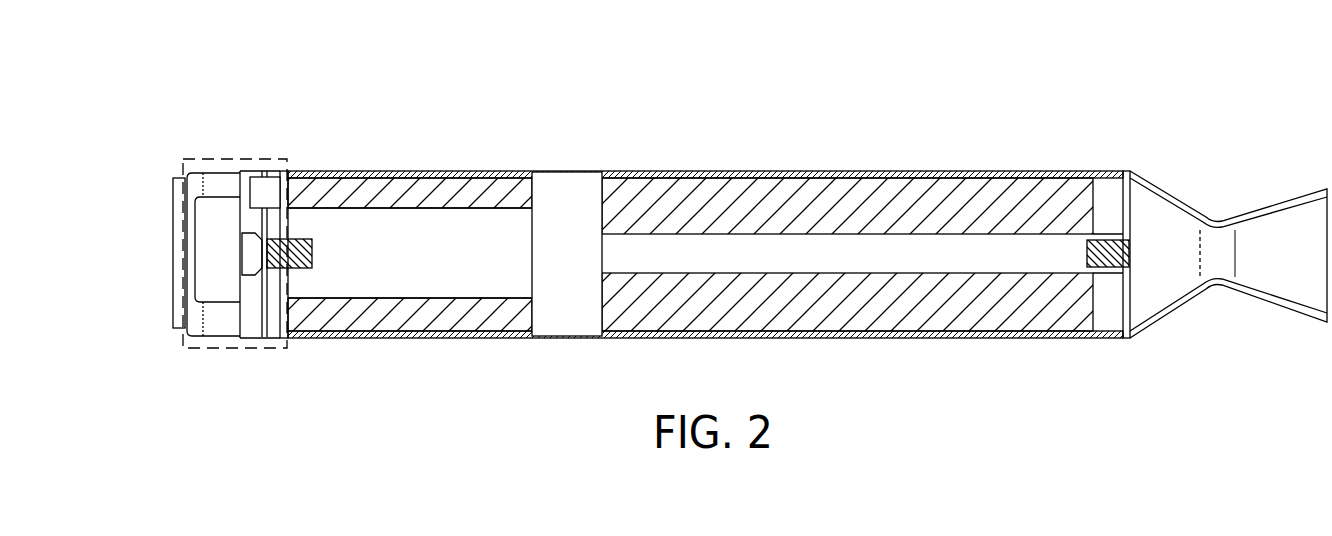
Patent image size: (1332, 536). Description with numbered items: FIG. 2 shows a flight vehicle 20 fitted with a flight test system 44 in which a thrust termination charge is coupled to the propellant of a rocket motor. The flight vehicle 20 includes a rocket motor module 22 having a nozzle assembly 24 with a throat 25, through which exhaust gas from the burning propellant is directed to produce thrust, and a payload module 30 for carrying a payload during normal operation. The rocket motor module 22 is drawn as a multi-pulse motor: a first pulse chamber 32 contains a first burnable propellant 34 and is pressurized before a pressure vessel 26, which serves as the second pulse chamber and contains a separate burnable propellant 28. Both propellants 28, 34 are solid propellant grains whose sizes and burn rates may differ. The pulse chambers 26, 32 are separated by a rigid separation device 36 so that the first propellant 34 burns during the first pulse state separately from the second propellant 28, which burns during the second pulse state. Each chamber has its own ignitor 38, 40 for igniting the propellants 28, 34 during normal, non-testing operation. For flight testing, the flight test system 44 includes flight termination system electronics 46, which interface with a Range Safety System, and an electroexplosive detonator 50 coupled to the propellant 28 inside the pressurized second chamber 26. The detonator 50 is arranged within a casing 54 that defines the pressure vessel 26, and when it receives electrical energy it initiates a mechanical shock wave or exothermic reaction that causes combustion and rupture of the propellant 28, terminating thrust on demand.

The flight vehicle 20 is at (157, 64).
The rocket motor module 22 is at (313, 156).
The nozzle assembly 24 is at (1184, 180).
The throat 25 is at (1215, 258).
The pressure vessel 26 is at (403, 176).
The burnable propellant 28 is at (477, 195).
The payload module 30 is at (208, 348).
The first pulse chamber 32 is at (732, 175).
The first burnable propellant 34 is at (870, 197).
The rigid separation device 36 is at (563, 190).
The ignitor 38 is at (290, 268).
The ignitor 40 is at (1112, 250).
The flight test system 44 is at (183, 343).
The flight termination system electronics 46 is at (195, 252).
The electroexplosive detonator 50 is at (250, 192).
The casing 54 is at (353, 171).